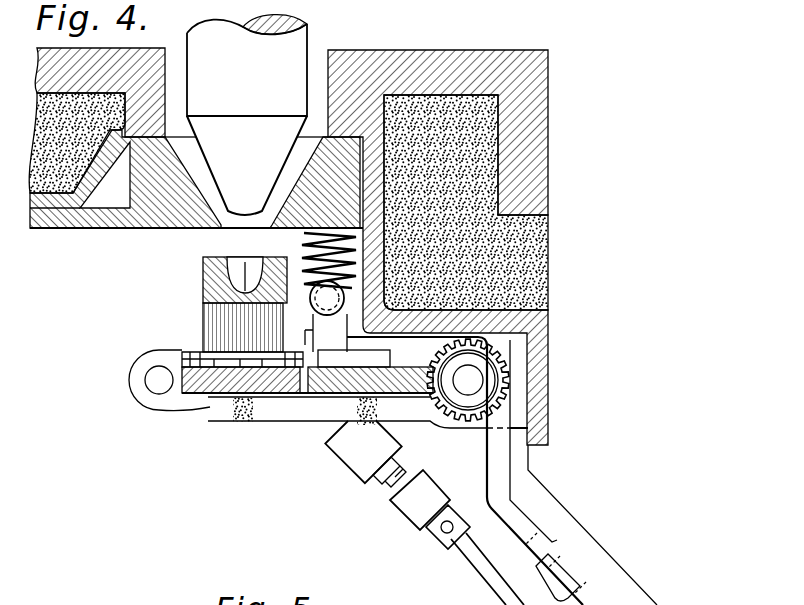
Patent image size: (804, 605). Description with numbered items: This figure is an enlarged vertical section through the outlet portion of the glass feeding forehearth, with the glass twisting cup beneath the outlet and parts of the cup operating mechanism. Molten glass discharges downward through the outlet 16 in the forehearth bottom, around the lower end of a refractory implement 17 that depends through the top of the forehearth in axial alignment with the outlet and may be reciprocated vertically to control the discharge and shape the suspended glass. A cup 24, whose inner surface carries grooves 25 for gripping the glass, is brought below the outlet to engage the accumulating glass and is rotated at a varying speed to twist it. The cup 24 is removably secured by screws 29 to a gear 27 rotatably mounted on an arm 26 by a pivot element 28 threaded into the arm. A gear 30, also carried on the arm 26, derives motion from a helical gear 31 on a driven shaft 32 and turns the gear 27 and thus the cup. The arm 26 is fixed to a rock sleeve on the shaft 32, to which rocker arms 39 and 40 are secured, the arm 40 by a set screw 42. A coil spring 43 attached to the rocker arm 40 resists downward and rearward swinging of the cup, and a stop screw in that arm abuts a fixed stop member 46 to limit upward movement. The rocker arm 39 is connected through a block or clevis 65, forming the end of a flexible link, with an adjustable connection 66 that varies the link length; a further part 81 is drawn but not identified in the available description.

The outlet 16 is at (297, 182).
The refractory implement 17 is at (290, 57).
The cup 24 is at (223, 330).
The grooves 25 is at (232, 262).
The arm 26 is at (240, 416).
The gear 27 is at (210, 398).
The pivot element 28 is at (195, 415).
The screws 29 is at (190, 352).
The gear 30 is at (318, 388).
The helical gear 31 is at (513, 382).
The driven shaft 32 is at (468, 380).
The rocker arm 39 is at (138, 382).
The rocker arm 40 is at (326, 339).
The set screw 42 is at (487, 327).
The coil spring 43 is at (303, 252).
The fixed stop member 46 is at (532, 408).
The block or clevis 65 is at (337, 441).
The adjustable connection 66 is at (408, 477).
The connecting rod 81 is at (474, 558).